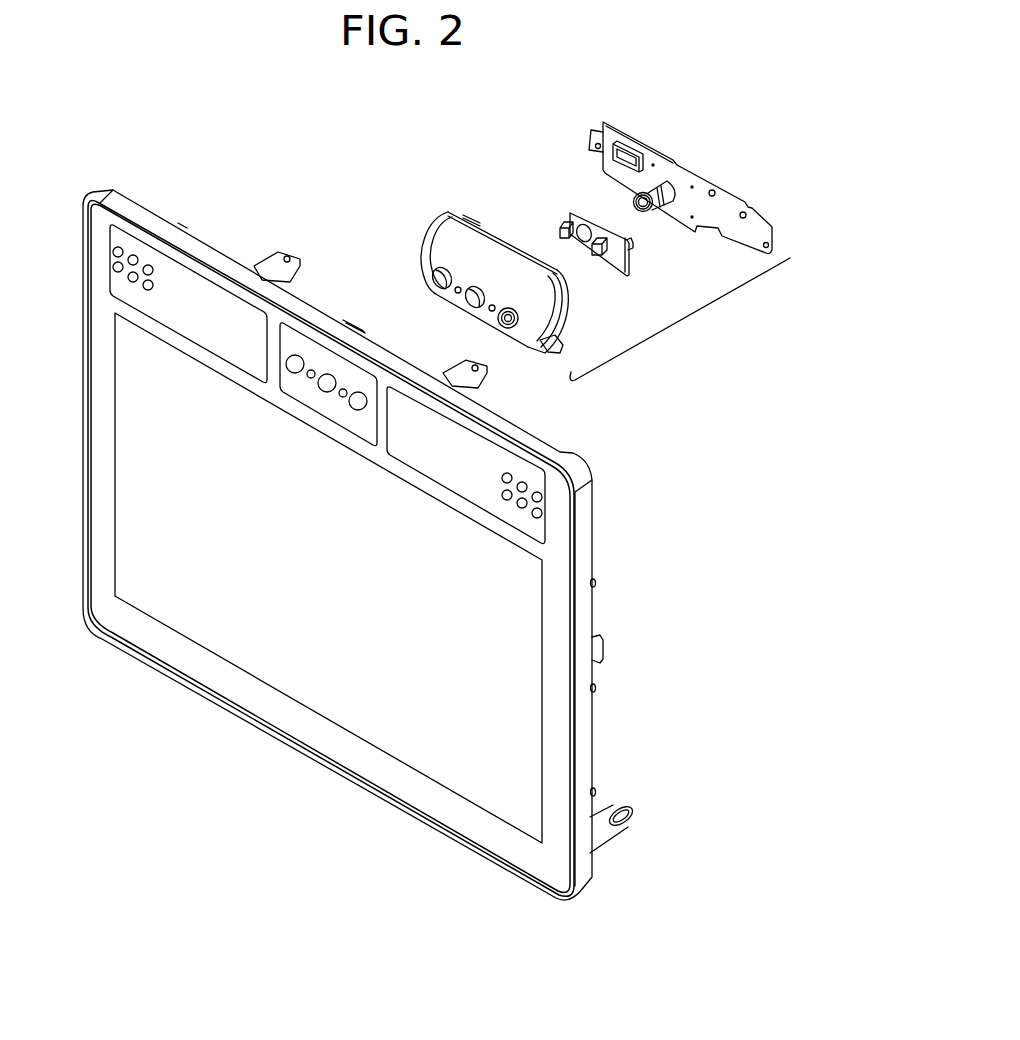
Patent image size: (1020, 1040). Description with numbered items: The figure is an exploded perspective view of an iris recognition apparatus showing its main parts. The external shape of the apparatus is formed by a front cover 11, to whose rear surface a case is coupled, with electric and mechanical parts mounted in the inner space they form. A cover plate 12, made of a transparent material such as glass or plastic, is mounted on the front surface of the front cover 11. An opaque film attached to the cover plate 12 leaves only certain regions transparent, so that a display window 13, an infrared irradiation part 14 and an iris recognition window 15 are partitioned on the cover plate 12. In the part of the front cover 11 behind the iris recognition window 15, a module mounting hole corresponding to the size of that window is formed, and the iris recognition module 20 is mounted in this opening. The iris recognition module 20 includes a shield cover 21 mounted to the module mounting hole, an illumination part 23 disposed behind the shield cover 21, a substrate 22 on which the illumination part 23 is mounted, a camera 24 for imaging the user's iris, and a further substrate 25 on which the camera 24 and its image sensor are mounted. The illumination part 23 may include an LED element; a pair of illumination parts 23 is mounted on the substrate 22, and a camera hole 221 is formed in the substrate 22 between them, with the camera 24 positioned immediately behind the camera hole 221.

The front cover 11 is at (585, 610).
The cover plate 12 is at (556, 678).
The display window 13 is at (515, 725).
The infrared irradiation part 14 is at (131, 256).
The iris recognition window 15 is at (302, 333).
The iris recognition module 20 is at (684, 325).
The shield cover 21 is at (455, 227).
The substrate 22 is at (573, 218).
The illumination part 23 is at (560, 225).
The camera hole 221 is at (582, 250).
The camera 24 is at (648, 183).
The substrate 25 is at (700, 185).